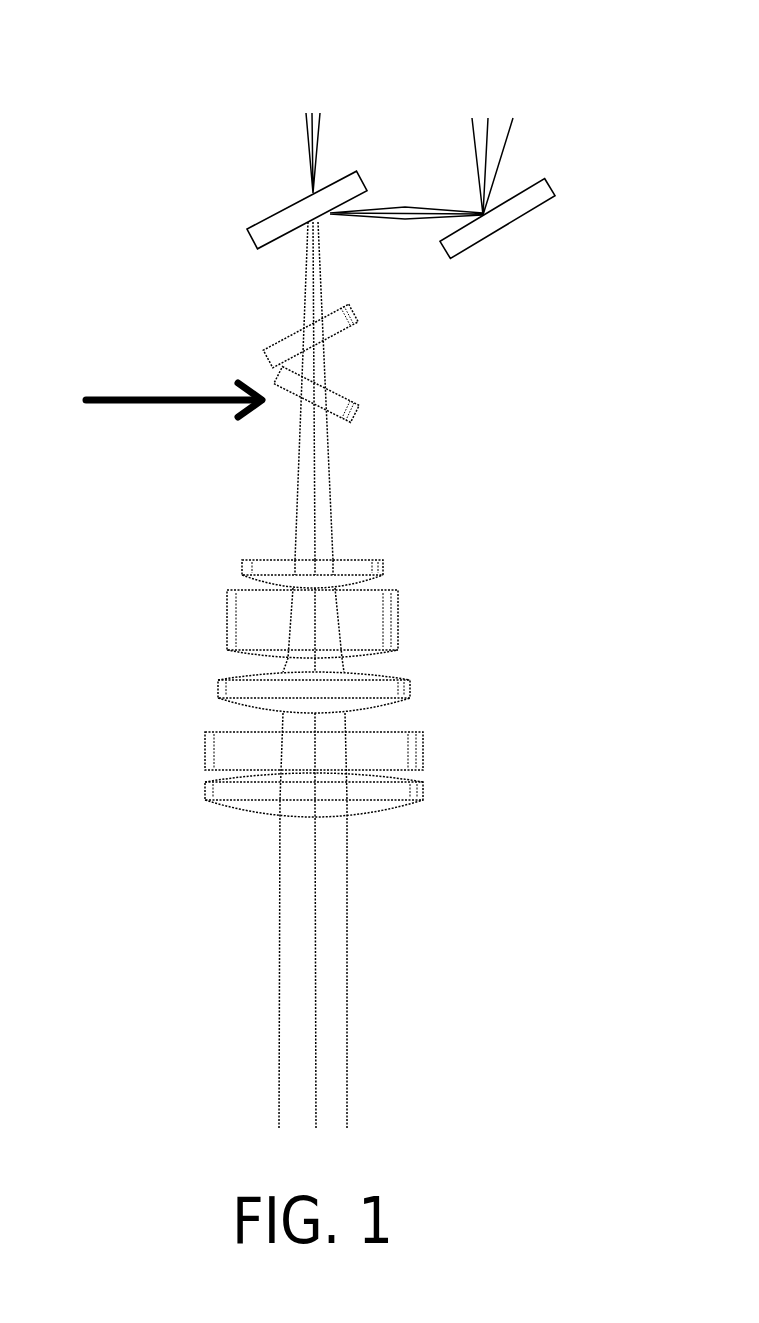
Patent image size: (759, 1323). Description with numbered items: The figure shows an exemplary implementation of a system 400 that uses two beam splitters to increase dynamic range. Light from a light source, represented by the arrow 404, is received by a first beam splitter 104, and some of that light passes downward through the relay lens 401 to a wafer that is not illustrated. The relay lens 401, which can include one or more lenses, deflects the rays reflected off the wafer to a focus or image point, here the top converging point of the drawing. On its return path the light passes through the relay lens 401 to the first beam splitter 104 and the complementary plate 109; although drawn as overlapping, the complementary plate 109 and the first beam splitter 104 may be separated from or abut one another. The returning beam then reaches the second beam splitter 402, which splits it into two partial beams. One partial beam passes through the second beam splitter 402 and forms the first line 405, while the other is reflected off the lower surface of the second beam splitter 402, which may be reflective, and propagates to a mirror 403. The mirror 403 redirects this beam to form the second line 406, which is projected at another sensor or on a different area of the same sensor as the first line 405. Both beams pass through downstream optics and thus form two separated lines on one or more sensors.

The system 400 is at (128, 160).
The relay lens 401 is at (457, 672).
The second beam splitter 402 is at (253, 232).
The mirror 403 is at (540, 196).
The arrow 404 is at (174, 412).
The first line 405 is at (298, 107).
The second line 406 is at (492, 110).
The complementary plate 109 is at (355, 310).
The first beam splitter 104 is at (358, 400).